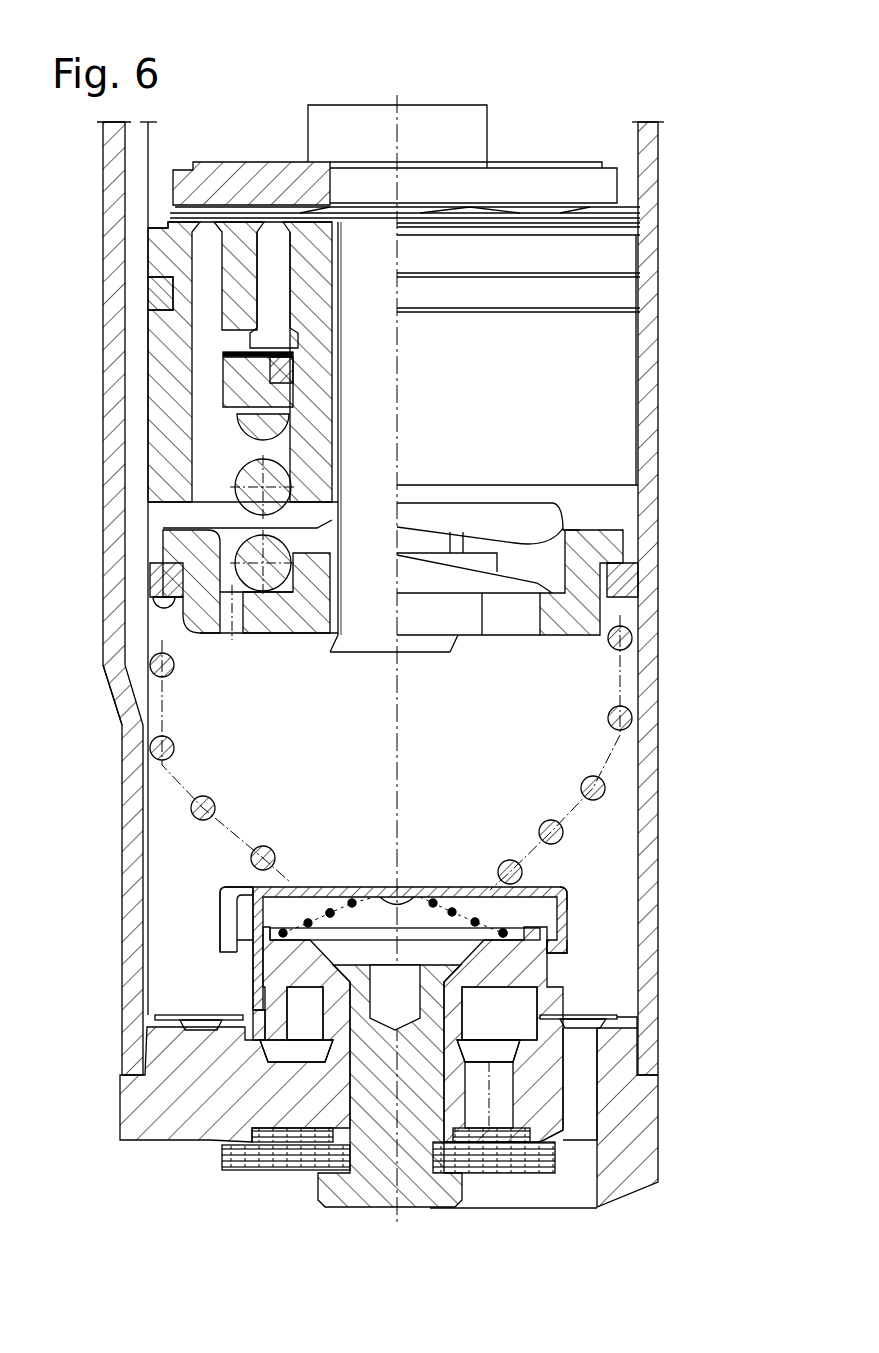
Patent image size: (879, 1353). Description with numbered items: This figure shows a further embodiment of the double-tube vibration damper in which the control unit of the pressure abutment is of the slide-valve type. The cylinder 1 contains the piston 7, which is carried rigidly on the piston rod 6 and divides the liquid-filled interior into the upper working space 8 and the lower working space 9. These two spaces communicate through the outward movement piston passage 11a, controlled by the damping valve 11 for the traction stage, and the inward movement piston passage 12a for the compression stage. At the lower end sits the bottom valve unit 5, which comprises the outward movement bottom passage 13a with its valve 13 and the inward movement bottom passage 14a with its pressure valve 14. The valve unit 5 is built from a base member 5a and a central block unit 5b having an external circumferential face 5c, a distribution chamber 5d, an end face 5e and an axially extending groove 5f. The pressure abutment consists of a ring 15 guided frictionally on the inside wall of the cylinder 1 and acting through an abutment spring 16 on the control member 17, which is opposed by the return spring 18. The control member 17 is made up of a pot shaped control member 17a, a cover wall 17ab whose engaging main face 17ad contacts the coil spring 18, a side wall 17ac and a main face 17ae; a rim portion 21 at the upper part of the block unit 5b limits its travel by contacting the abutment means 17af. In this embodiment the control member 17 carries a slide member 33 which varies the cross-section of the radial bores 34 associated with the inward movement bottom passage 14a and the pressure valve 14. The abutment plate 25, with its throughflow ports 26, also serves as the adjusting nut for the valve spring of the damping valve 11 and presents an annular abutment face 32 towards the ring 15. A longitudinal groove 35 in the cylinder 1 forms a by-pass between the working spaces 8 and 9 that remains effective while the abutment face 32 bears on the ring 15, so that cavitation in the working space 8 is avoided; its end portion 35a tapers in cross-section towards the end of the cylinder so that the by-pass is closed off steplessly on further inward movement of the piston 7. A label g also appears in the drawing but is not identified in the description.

The cylinder 1 is at (648, 290).
The bottom valve unit 5 is at (635, 1117).
The base member 5a is at (641, 1095).
The central block unit 5b is at (538, 1000).
The external circumferential face 5c is at (548, 975).
The distribution chamber 5d is at (297, 1000).
The end face 5e is at (503, 933).
The axially extending groove 5f is at (260, 955).
The piston rod 6 is at (478, 133).
The piston 7 is at (165, 328).
The upper working space 8 is at (240, 134).
The lower working space 9 is at (270, 734).
The damping valve 11 is at (217, 407).
The outward movement piston passage 11a is at (285, 280).
The inward movement piston passage 12a is at (202, 298).
The valve 13 is at (580, 1013).
The outward movement bottom passage 13a is at (588, 1068).
The pressure valve 14 is at (218, 1177).
The inward movement bottom passage 14a is at (497, 1117).
The ring 15 is at (162, 560).
The abutment spring 16 is at (212, 800).
The control member 17 is at (577, 913).
The pot shaped control member 17a is at (485, 817).
The cover wall 17ab is at (345, 910).
The side wall 17ac is at (570, 897).
The engaging main face 17ad is at (418, 890).
The main face 17ae is at (283, 928).
The abutment means 17af is at (570, 940).
The return spring 18 is at (352, 905).
The rim portion 21 is at (230, 895).
The abutment plate 25 is at (223, 627).
The throughflow ports 26 is at (192, 608).
The annular abutment face 32 is at (160, 555).
The slide member 33 is at (245, 972).
The radial bores 34 is at (210, 1030).
The longitudinal groove 35 is at (132, 382).
The end portion 35a is at (125, 705).
The gap g is at (610, 822).